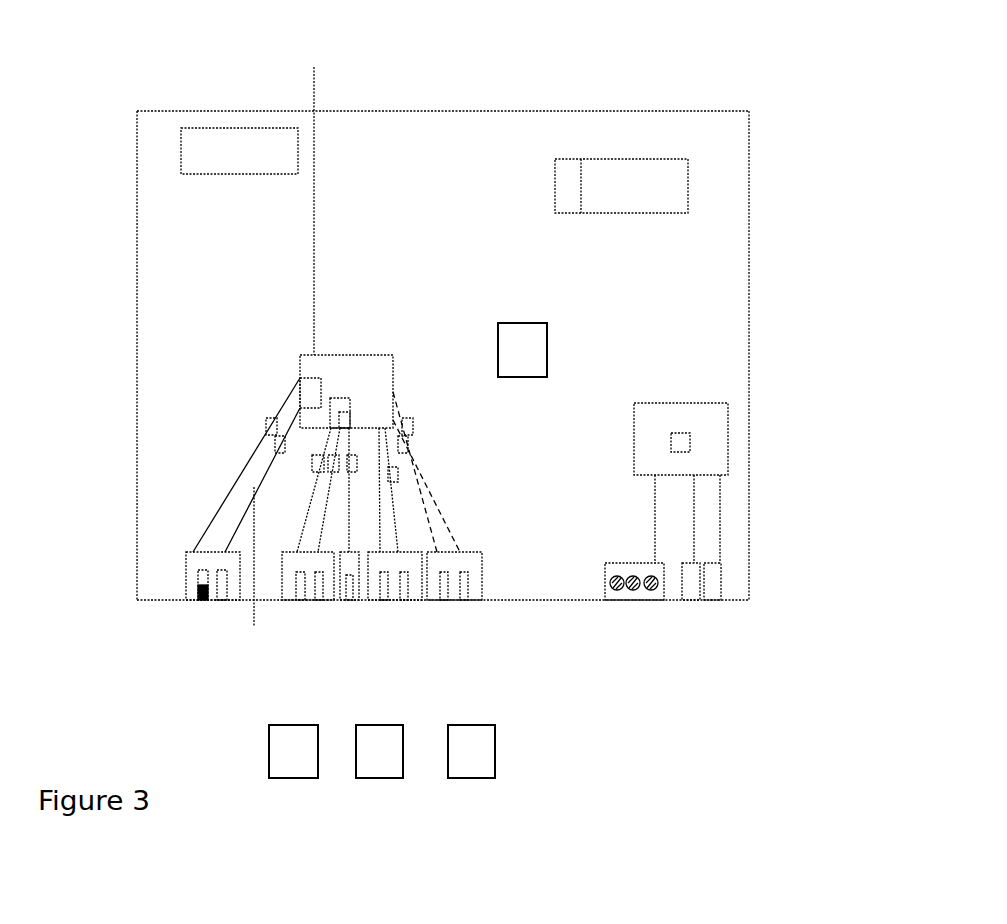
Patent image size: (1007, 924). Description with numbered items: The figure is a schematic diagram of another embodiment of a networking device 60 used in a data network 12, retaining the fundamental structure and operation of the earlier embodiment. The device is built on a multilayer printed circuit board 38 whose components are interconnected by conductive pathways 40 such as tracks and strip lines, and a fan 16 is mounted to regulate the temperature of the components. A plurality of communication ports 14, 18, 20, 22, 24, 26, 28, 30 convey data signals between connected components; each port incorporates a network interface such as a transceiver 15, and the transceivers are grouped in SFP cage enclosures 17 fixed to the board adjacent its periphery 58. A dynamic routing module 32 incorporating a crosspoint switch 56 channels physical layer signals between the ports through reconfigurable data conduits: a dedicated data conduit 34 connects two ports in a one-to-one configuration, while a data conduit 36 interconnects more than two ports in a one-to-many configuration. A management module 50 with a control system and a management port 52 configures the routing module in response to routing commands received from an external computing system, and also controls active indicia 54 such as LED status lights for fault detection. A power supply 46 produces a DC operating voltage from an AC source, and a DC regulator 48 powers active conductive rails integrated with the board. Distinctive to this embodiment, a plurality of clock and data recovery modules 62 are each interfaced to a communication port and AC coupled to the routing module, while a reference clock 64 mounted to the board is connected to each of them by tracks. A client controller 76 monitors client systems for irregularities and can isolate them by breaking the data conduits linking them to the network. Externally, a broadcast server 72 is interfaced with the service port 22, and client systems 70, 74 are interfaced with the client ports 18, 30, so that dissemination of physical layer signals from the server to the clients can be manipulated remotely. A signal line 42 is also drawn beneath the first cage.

The data network 12 is at (790, 100).
The communication port 14 is at (203, 600).
The transceiver 15 is at (198, 588).
The fan 16 is at (272, 128).
The SFP cage enclosure 17 is at (185, 552).
The client communication port 18 is at (300, 600).
The communication port 20 is at (319, 600).
The service port 22 is at (350, 600).
The communication port 24 is at (384, 600).
The communication port 26 is at (404, 600).
The communication port 28 is at (444, 600).
The client communication port 30 is at (464, 600).
The dynamic routing module 32 is at (348, 349).
The dedicated data conduit 34 is at (315, 378).
The data conduit 36 is at (350, 398).
The multilayer printed circuit board 38 is at (707, 111).
The conductive pathways 40 is at (235, 480).
The signal line 42 is at (255, 570).
The power supply 46 is at (613, 159).
The DC regulator 48 is at (567, 159).
The management module 50 is at (728, 403).
The management port 52 is at (713, 600).
The active indicia 54 is at (655, 600).
The crosspoint switch 56 is at (318, 198).
The periphery 58 is at (518, 602).
The networking device 60 is at (169, 92).
The clock and data recovery module 62 is at (410, 420).
The reference clock 64 is at (522, 350).
The client system 70 is at (293, 751).
The broadcast server 72 is at (379, 751).
The client system 74 is at (471, 751).
The client controller 76 is at (683, 433).